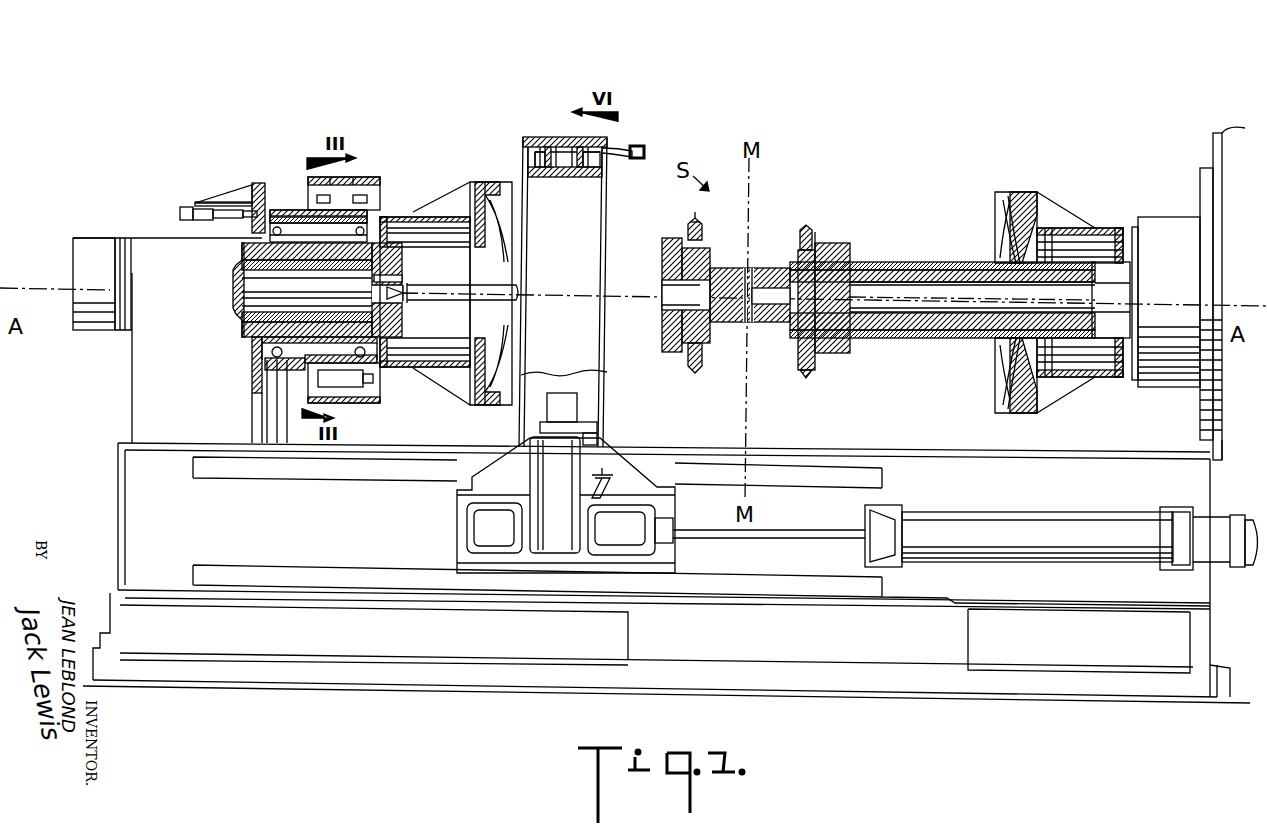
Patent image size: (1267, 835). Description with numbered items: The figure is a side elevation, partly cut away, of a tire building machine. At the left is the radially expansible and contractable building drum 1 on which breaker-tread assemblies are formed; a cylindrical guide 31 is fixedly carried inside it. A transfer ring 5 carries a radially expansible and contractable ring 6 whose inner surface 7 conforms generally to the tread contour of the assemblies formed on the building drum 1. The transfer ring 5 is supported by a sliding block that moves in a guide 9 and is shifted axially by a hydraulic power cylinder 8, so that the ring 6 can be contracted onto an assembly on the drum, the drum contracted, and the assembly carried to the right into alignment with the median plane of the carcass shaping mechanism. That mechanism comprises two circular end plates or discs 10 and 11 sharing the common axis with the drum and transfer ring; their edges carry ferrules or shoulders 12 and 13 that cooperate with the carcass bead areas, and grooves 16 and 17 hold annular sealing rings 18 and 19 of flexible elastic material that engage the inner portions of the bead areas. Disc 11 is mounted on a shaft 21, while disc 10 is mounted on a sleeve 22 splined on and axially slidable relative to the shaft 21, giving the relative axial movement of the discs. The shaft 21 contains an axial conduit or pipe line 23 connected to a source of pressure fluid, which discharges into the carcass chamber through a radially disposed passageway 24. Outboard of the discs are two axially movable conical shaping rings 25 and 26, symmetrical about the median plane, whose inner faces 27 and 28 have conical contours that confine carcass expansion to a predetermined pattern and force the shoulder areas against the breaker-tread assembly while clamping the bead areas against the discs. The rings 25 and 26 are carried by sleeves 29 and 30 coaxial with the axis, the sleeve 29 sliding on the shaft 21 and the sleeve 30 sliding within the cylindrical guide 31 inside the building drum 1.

The building drum 1 is at (375, 177).
The transfer ring 5 is at (607, 372).
The radially expansible and contractable ring 6 is at (551, 180).
The inner surface 7 is at (575, 180).
The hydraulic power cylinder 8 is at (1052, 522).
The guide 9 is at (337, 567).
The end plate or disc 10 is at (822, 243).
The end plate or disc 11 is at (682, 247).
The ferrule or shoulder 12 is at (805, 227).
The ferrule or shoulder 13 is at (702, 227).
The groove 16 is at (814, 236).
The groove 17 is at (688, 226).
The annular sealing ring 18 is at (810, 228).
The annular sealing ring 19 is at (690, 222).
The shaft 21 is at (975, 325).
The sleeve 22 is at (883, 340).
The axial conduit or pipe line 23 is at (920, 335).
The radially disposed passageway 24 is at (752, 270).
The conical shaping ring 25 is at (1017, 412).
The conical shaping ring 26 is at (475, 398).
The inner face 27 is at (993, 398).
The inner face 28 is at (513, 398).
The sleeve 29 is at (1086, 365).
The sleeve 30 is at (233, 295).
The cylindrical guide 31 is at (387, 287).